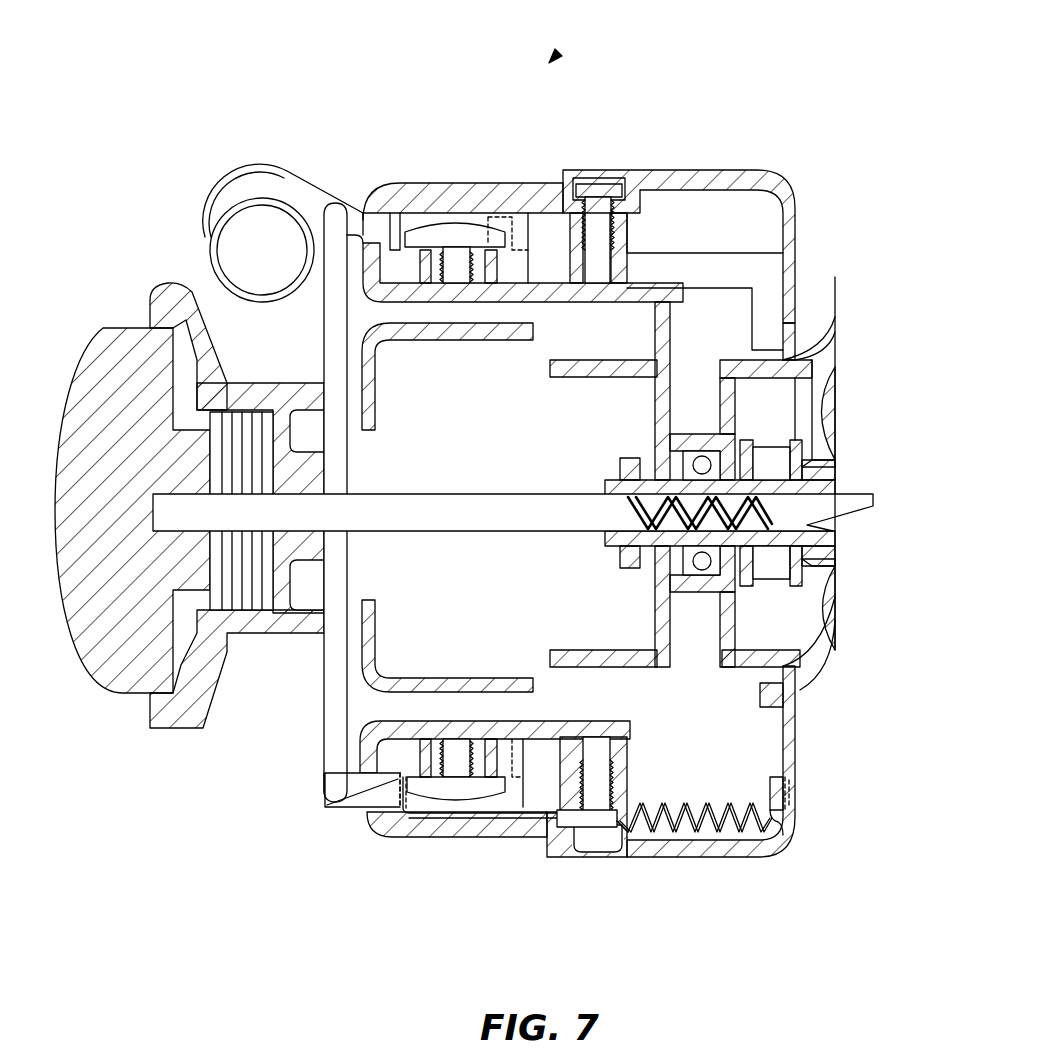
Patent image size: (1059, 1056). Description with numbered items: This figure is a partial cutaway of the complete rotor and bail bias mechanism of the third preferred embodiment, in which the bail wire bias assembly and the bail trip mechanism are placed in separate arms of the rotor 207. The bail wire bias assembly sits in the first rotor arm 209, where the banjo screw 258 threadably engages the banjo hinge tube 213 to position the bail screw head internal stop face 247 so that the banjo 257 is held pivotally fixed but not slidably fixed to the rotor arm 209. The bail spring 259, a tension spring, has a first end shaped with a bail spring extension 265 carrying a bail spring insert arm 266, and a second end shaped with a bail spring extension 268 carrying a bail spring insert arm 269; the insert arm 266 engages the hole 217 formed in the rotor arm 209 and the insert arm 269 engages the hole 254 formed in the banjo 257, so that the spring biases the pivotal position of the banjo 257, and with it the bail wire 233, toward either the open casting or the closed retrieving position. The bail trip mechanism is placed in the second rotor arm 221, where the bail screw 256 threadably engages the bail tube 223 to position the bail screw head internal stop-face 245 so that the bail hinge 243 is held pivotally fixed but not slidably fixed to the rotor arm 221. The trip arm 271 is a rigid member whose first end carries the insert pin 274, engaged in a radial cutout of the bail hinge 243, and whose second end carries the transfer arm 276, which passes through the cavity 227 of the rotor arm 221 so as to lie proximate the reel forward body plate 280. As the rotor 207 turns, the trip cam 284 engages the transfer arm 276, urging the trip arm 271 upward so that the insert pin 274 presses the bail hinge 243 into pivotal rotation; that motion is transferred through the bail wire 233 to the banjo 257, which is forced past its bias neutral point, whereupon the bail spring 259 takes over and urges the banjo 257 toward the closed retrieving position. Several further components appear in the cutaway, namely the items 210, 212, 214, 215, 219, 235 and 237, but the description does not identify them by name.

The rotor 207 is at (552, 58).
The first rotor arm 209 is at (517, 730).
The coil spring 210 is at (710, 840).
The screw 212 is at (610, 800).
The banjo hinge tube 213 is at (437, 739).
The spring seat 214 is at (580, 793).
The cavity 215 is at (717, 773).
The rotor arm hole 217 is at (783, 803).
The bushing 219 is at (493, 739).
The second rotor arm 221 is at (510, 290).
The bail tube 223 is at (477, 280).
The cavity 227 is at (695, 210).
The bail wire 233 is at (338, 470).
The clip 235 is at (337, 783).
The cable clamp 237 is at (312, 190).
The bail hinge 243 is at (350, 200).
The bail screw head internal stop-face 245 is at (440, 302).
The bail screw head internal stop face 247 is at (477, 777).
The banjo hole 254 is at (387, 793).
The bail screw 256 is at (473, 232).
The banjo 257 is at (383, 812).
The banjo screw 258 is at (477, 803).
The bail spring 259 is at (665, 833).
The bail spring extension 265 is at (787, 840).
The bail spring insert arm 266 is at (783, 787).
The bail spring extension 268 is at (463, 817).
The bail spring insert arm 269 is at (402, 773).
The trip arm 271 is at (662, 267).
The insert pin 274 is at (512, 227).
The transfer arm 276 is at (765, 287).
The reel forward body plate 280 is at (780, 707).
The trip cam 284 is at (770, 713).